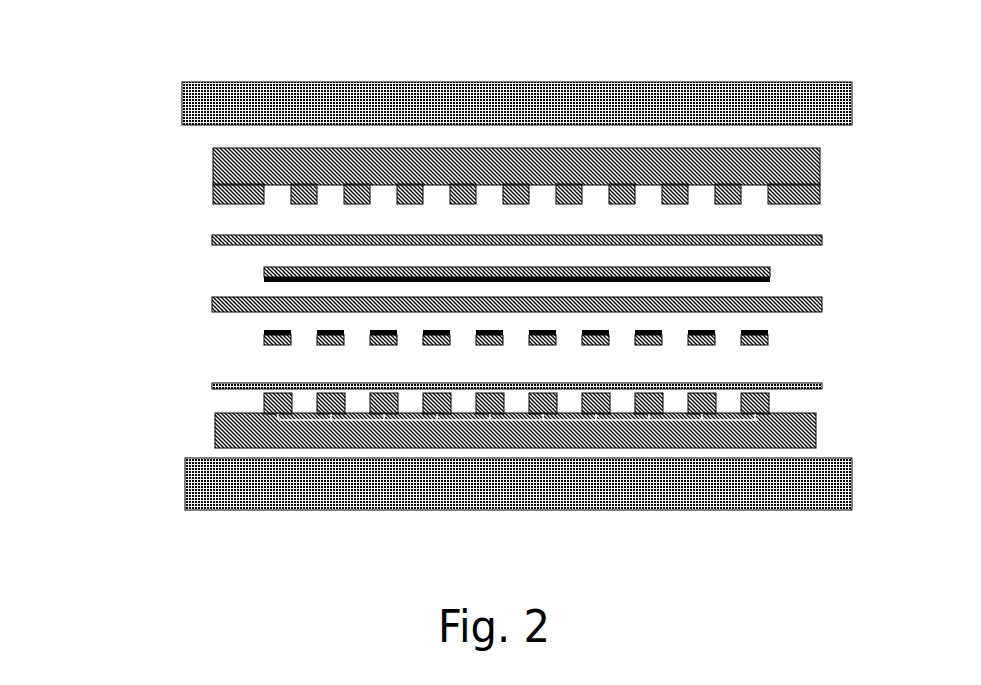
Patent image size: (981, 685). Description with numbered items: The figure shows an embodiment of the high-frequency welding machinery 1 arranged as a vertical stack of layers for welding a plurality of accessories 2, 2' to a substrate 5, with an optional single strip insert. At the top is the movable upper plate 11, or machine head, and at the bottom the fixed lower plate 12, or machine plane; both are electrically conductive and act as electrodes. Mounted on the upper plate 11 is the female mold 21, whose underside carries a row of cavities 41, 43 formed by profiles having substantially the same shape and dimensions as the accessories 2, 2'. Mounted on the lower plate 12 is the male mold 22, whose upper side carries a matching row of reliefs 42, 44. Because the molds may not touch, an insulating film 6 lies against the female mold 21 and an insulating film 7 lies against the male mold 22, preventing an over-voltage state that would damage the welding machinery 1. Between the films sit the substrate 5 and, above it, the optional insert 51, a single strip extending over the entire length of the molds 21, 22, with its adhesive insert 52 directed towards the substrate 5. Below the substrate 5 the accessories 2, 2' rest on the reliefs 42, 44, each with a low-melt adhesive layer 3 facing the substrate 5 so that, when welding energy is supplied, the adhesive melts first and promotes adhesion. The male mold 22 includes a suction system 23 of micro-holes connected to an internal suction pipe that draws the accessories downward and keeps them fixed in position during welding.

The high-frequency welding machinery 1 is at (138, 131).
The movable upper plate 11 is at (202, 105).
The fixed lower plate 12 is at (200, 488).
The female mold 21 is at (551, 180).
The male mold 22 is at (574, 491).
The suction system 23 is at (432, 418).
The cavity 41 is at (752, 187).
The relief 42 is at (769, 396).
The cavity 43 is at (702, 188).
The relief 44 is at (700, 393).
The substrate 5 is at (205, 300).
The optional insert 51 is at (262, 270).
The adhesive insert 52 is at (262, 278).
The insulating film 6 is at (203, 240).
The insulating film 7 is at (208, 383).
The accessory 2 is at (565, 345).
The accessory 2' is at (724, 355).
The adhesive layer 3 is at (768, 332).